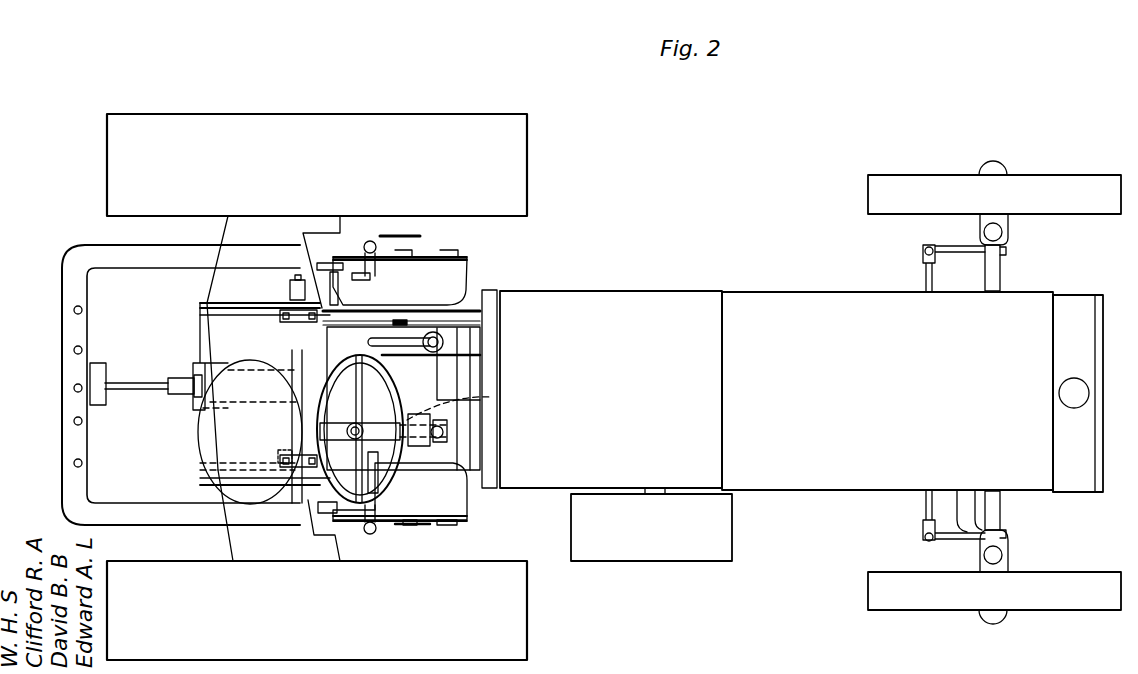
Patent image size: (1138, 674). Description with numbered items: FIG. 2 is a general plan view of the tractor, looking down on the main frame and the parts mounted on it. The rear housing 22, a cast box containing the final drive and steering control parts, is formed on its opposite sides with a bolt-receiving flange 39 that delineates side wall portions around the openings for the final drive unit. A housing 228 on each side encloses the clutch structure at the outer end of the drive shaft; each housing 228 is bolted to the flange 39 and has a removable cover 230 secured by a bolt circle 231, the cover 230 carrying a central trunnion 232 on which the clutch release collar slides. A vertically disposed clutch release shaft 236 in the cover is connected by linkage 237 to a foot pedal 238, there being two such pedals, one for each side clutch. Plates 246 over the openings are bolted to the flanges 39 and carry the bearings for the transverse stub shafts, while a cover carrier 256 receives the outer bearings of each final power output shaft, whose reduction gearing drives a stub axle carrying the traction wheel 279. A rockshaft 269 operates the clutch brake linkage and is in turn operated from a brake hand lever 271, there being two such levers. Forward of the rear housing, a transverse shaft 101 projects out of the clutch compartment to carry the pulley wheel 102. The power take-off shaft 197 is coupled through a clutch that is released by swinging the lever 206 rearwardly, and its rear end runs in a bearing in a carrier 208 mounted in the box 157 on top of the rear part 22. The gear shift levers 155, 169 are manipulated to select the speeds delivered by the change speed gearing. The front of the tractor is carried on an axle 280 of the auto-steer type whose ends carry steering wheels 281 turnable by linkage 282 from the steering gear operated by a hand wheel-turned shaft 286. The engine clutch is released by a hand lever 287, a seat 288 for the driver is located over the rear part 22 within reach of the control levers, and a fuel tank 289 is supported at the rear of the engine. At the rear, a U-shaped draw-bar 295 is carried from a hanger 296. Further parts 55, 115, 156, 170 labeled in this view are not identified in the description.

The rear housing 22 is at (470, 460).
The bolt-receiving flange 39 is at (200, 313).
The frame member 55 is at (1068, 484).
The transverse shaft 101 is at (667, 487).
The pulley wheel 102 is at (652, 558).
The pivot pin 115 is at (470, 363).
The gear shift lever 155 is at (470, 333).
The bar 156 is at (470, 378).
The box 157 is at (470, 382).
The gear shift lever 169 is at (478, 398).
The shaft 170 is at (470, 412).
The power take-off shaft 197 is at (182, 403).
The lever 206 is at (400, 281).
The carrier 208 is at (195, 418).
The housing 228 is at (473, 265).
The removable cover 230 is at (433, 253).
The bolt circle 231 is at (400, 257).
The central trunnion 232 is at (400, 233).
The clutch release shaft 236 is at (370, 240).
The linkage 237 is at (293, 280).
The foot pedal 238 is at (370, 467).
The plates 246 is at (198, 302).
The cover carrier 256 is at (227, 282).
The rockshaft 269 is at (310, 535).
The brake hand lever 271 is at (320, 262).
The traction wheel 279 is at (470, 123).
The axle 280 is at (998, 268).
The steering wheels 281 is at (935, 183).
The linkage 282 is at (928, 508).
The hand wheel-turned shaft 286 is at (470, 433).
The hand lever 287 is at (313, 273).
The seat 288 is at (203, 462).
The fuel tank 289 is at (602, 389).
The U-shaped draw-bar 295 is at (75, 262).
The hanger 296 is at (145, 347).